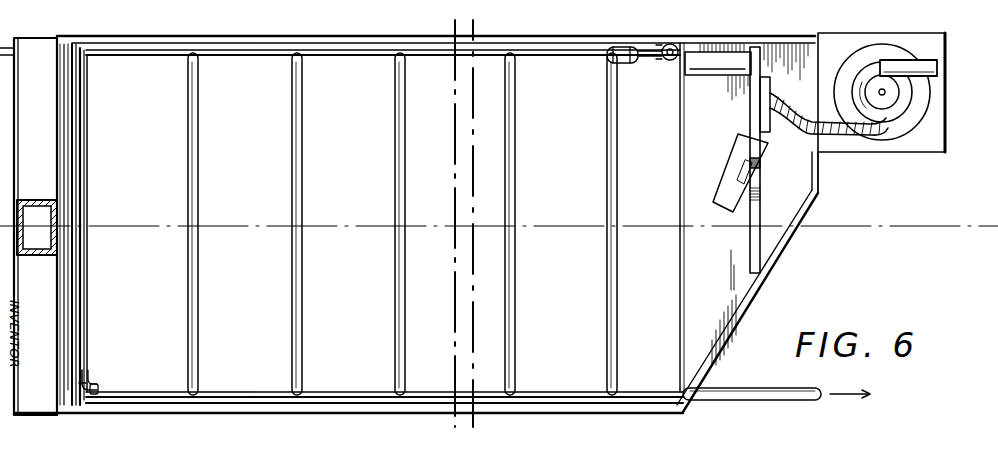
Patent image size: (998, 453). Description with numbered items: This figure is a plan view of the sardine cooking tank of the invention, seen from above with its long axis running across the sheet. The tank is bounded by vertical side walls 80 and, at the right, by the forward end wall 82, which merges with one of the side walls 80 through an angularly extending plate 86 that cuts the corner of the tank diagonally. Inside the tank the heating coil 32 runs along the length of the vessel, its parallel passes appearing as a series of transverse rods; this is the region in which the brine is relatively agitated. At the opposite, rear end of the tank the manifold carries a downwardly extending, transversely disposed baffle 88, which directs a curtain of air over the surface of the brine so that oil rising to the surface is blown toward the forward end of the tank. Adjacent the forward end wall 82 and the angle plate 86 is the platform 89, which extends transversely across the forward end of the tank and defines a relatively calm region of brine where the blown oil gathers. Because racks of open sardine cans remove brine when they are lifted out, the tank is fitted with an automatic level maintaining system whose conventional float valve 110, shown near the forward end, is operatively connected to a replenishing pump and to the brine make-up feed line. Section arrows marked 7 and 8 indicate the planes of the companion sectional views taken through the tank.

The vertical side wall 80 is at (257, 36).
The baffle 88 is at (70, 154).
The heating coil 32 is at (303, 152).
The float valve 110 is at (630, 64).
The platform 89 is at (700, 145).
The forward end wall 82 is at (819, 180).
The angularly extending plate 86 is at (762, 282).
The section line 8-8 indicator 8 is at (497, 13).
The section line 7-7 indicator 7 is at (983, 245).